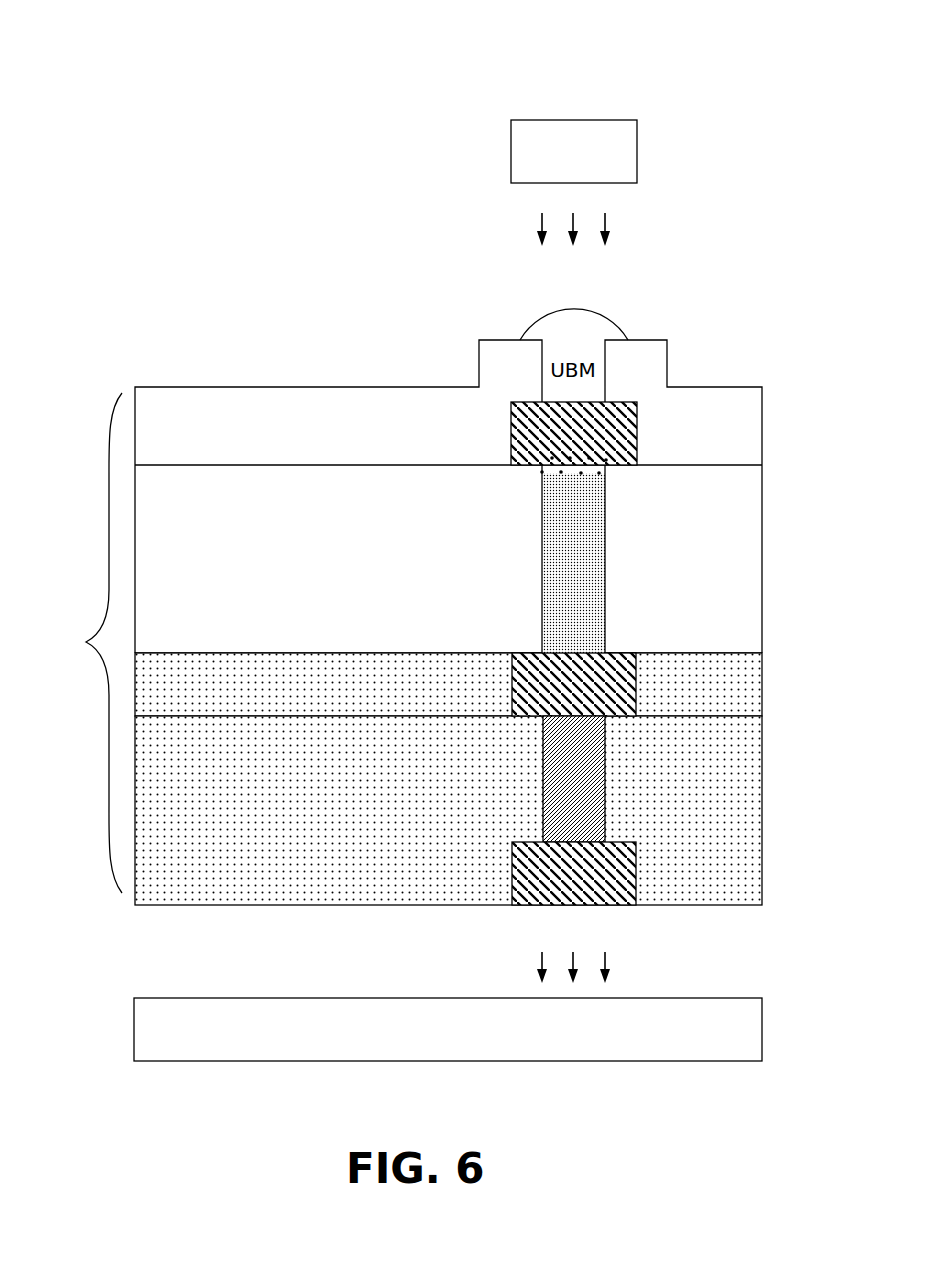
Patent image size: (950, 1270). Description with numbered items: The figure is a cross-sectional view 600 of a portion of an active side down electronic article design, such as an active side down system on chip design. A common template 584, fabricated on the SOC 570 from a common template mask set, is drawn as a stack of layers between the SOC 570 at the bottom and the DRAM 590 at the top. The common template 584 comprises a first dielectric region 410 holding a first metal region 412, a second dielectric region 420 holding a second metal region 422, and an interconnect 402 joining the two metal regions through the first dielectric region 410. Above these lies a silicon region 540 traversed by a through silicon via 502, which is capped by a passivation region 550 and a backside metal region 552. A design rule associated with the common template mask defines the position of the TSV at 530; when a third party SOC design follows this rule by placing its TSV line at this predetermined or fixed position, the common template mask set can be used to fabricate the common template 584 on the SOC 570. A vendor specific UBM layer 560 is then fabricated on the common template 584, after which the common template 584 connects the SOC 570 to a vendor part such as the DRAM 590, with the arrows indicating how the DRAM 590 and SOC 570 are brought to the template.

The cross-sectional view 600 is at (130, 50).
The DRAM 590 is at (637, 152).
The vendor specific UBM layer 560 is at (573, 317).
The passivation region 550 is at (738, 433).
The backside metal region 552 is at (620, 458).
The silicon region 540 is at (738, 560).
The TSV position 530 is at (560, 473).
The through silicon via (TSV) 502 is at (550, 560).
The second dielectric region 420 is at (738, 685).
The second metal region 422 is at (623, 707).
The first dielectric region 410 is at (738, 810).
The interconnect 402 is at (550, 780).
The first metal region 412 is at (620, 899).
The SOC 570 is at (746, 1014).
The common template 584 is at (111, 642).